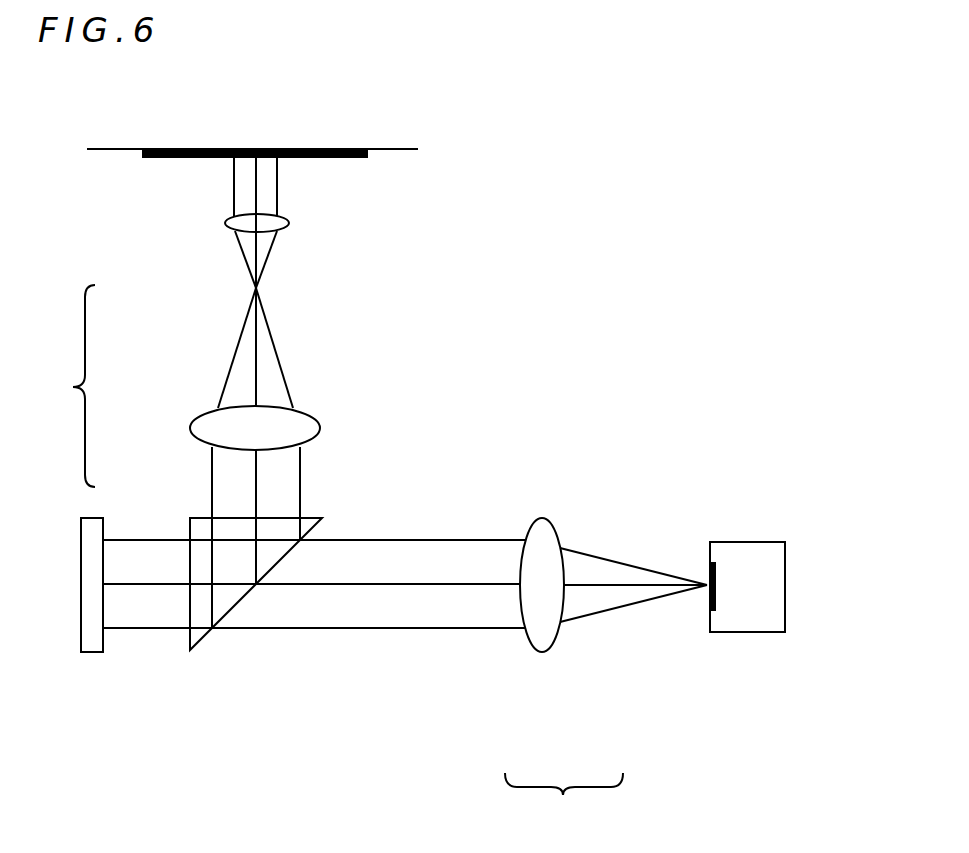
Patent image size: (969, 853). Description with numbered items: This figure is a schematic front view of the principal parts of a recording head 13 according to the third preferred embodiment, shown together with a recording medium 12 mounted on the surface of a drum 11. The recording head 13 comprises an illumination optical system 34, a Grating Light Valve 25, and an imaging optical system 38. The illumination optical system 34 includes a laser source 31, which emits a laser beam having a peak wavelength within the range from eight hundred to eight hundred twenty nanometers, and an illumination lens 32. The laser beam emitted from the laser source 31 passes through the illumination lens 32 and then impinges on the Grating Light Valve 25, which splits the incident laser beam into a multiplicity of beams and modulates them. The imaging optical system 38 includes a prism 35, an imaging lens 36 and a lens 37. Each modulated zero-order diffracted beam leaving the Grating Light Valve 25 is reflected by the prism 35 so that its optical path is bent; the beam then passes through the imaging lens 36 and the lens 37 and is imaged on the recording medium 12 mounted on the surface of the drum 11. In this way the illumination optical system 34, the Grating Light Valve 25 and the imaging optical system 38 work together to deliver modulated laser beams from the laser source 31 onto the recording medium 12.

The drum 11 is at (382, 149).
The recording medium 12 is at (335, 157).
The recording head 13 is at (290, 653).
The Grating Light Valve 25 is at (92, 635).
The laser source 31 is at (713, 625).
The illumination lens 32 is at (533, 633).
The illumination optical system 34 is at (564, 803).
The prism 35 is at (195, 532).
The imaging lens 36 is at (202, 427).
The lens 37 is at (228, 222).
The imaging optical system 38 is at (64, 386).